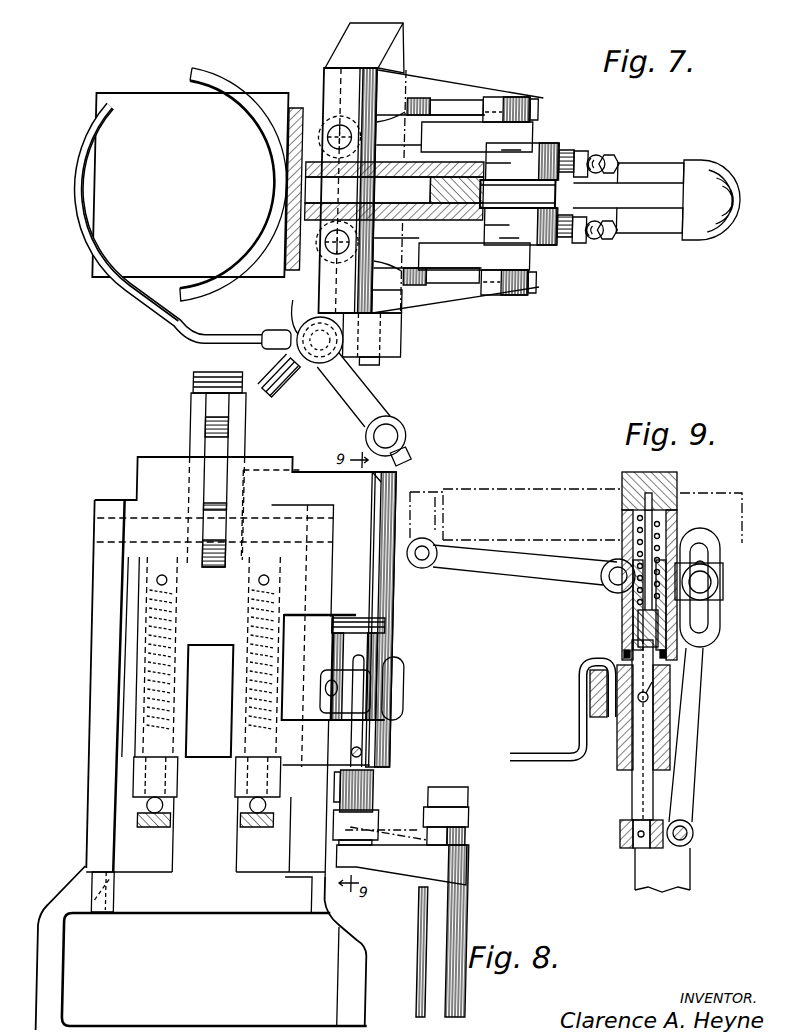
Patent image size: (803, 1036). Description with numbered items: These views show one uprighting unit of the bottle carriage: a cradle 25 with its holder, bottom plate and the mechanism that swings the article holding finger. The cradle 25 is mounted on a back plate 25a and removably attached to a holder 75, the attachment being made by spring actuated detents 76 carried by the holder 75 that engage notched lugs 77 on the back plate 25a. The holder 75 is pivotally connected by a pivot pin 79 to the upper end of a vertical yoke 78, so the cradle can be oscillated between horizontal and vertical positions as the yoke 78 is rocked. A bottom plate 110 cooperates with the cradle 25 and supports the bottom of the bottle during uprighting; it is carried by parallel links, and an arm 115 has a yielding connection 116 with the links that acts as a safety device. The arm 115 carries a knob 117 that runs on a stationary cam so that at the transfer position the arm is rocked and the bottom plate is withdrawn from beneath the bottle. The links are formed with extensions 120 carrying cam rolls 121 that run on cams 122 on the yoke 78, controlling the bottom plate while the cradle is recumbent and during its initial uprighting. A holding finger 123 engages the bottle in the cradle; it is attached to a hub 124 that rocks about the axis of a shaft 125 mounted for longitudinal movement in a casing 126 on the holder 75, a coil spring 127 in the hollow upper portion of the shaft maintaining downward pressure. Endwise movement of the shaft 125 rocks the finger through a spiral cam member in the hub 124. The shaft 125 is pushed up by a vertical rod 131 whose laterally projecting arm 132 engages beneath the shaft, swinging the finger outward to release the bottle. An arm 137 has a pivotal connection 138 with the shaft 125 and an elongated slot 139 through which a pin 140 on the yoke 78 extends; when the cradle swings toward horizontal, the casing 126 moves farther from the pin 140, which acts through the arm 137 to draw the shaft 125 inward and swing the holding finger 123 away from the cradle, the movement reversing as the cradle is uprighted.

In FIG. 7, the cradle 25 is at (268, 136).
In FIG. 7, the back plate 25a is at (297, 108).
In FIG. 7, the holder 75 is at (368, 106).
In FIG. 8, the holder 75 is at (146, 617).
In FIG. 8, the spring actuated detent 76 is at (166, 808).
In FIG. 8, the notched lug 77 is at (160, 827).
In FIG. 7, the yoke 78 is at (331, 70).
In FIG. 8, the yoke 78 is at (360, 960).
In FIG. 7, the pivot pin 79 is at (321, 300).
In FIG. 8, the pivot pin 79 is at (141, 515).
In FIG. 7, the bottom plate 110 is at (156, 106).
In FIG. 7, the arm 115 is at (662, 225).
In FIG. 7, the yielding connection 116 is at (594, 155).
In FIG. 7, the knob 117 is at (700, 170).
In FIG. 7, the extension 120 is at (470, 127).
In FIG. 7, the cam roll 121 is at (545, 105).
In FIG. 7, the cam 122 is at (470, 282).
In FIG. 7, the holding finger 123 is at (148, 306).
In FIG. 8, the holding finger 123 is at (367, 742).
In FIG. 9, the holding finger 123 is at (540, 755).
In FIG. 8, the hub 124 is at (381, 653).
In FIG. 9, the hub 124 is at (620, 650).
In FIG. 8, the shaft 125 is at (368, 790).
In FIG. 7, the casing 126 is at (284, 388).
In FIG. 8, the casing 126 is at (389, 610).
In FIG. 9, the casing 126 is at (498, 497).
In FIG. 9, the coil spring 127 is at (658, 530).
In FIG. 7, the vertical rod 131 is at (396, 438).
In FIG. 8, the vertical rod 131 is at (460, 918).
In FIG. 7, the arm 132 is at (368, 405).
In FIG. 8, the arm 132 is at (418, 873).
In FIG. 9, the arm 137 is at (698, 673).
In FIG. 9, the pivotal connection 138 is at (693, 834).
In FIG. 9, the elongated slot 139 is at (700, 631).
In FIG. 7, the pin 140 is at (378, 372).
In FIG. 9, the pin 140 is at (706, 583).